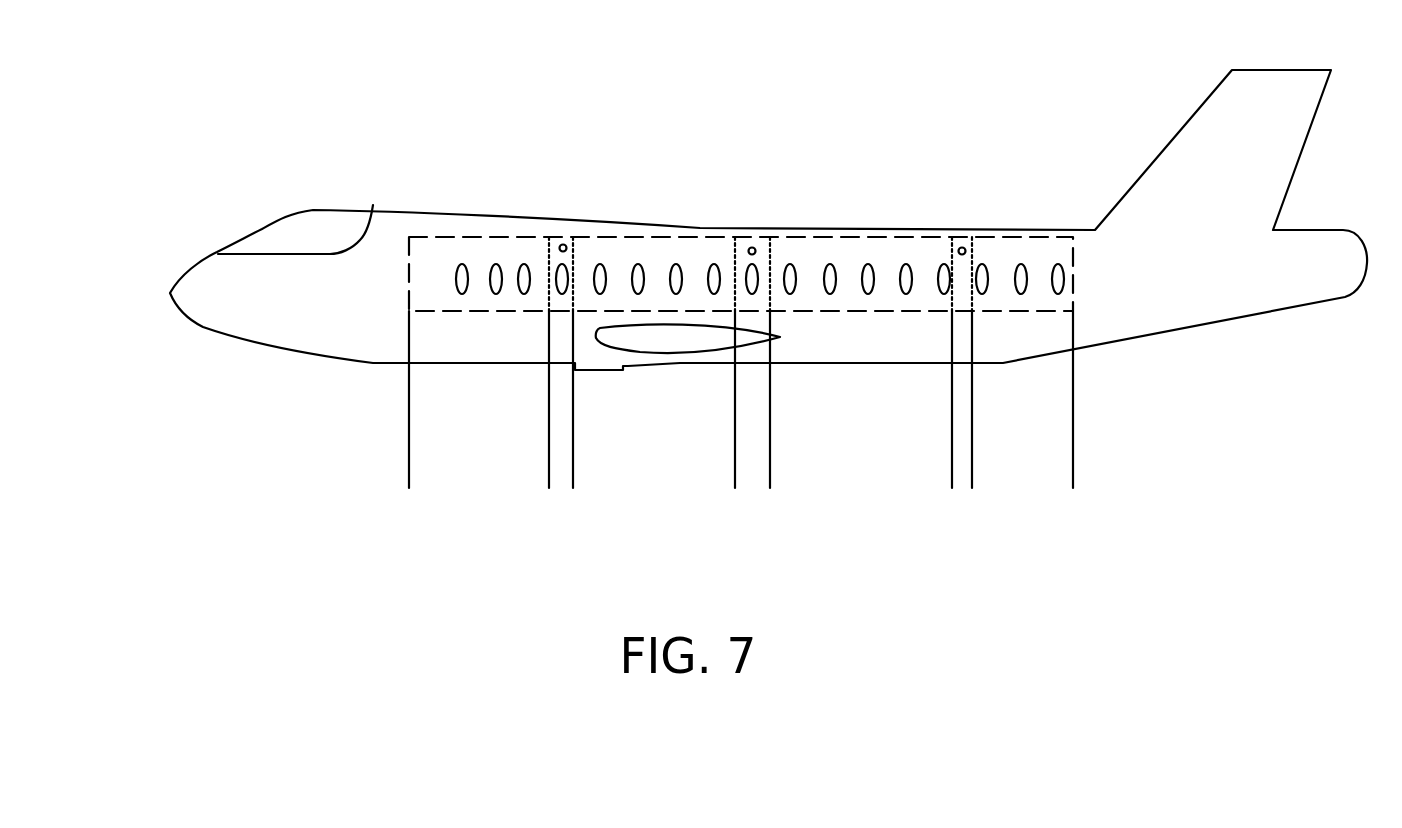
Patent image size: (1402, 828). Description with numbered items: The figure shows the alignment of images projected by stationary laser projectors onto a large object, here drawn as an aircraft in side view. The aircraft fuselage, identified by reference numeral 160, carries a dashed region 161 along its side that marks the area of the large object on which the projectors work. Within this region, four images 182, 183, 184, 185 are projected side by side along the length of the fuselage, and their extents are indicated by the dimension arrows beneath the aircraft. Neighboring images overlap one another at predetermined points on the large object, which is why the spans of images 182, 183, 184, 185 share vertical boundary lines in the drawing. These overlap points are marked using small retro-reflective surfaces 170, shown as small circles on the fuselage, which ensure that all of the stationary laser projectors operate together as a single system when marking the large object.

The aircraft 160 is at (412, 308).
The fuselage section 161 is at (412, 235).
The retro-reflective surfaces 170 is at (962, 247).
The image 182 is at (573, 447).
The image 183 is at (770, 467).
The image 184 is at (735, 447).
The image 185 is at (952, 467).